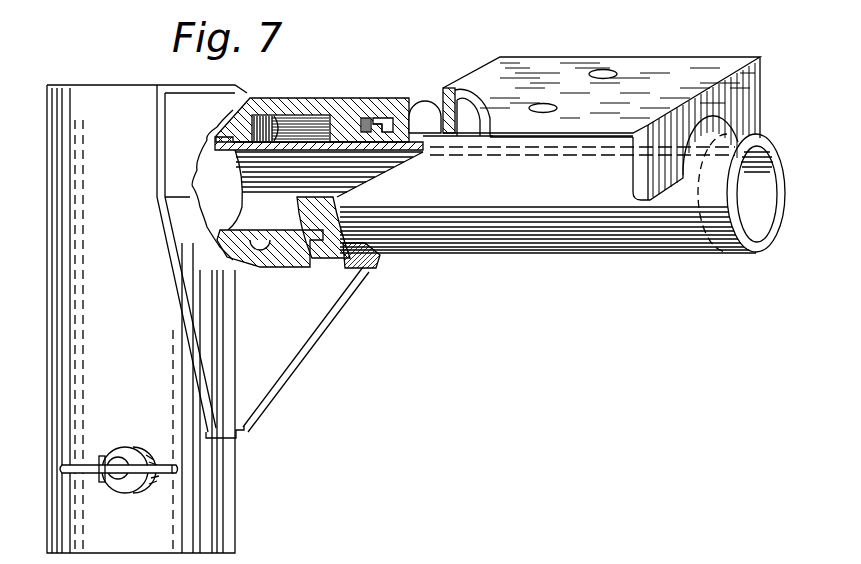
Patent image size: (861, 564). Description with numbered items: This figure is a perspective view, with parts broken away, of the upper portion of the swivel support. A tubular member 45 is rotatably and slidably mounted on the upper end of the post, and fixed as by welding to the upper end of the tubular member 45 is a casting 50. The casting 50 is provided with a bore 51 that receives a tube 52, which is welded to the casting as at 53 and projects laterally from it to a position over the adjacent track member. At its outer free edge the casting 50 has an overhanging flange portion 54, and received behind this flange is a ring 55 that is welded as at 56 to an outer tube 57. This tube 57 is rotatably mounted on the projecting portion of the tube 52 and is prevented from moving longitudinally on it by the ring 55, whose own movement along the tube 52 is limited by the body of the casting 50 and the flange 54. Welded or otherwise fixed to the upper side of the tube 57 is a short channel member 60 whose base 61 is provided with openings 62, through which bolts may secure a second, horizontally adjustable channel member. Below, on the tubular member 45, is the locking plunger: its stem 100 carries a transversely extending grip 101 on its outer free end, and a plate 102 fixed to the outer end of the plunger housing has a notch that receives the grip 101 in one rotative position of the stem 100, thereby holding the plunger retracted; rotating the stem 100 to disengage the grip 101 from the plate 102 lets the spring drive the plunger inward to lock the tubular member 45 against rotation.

The tubular member 45 is at (67, 395).
The casting 50 is at (252, 116).
The bore 51 is at (224, 146).
The tube 52 is at (291, 230).
The weld 53 is at (222, 236).
The overhanging flange portion 54 is at (418, 131).
The ring 55 is at (381, 121).
The weld 56 is at (357, 117).
The tube 57 is at (477, 150).
The channel member 60 is at (446, 94).
The base 61 is at (738, 64).
The openings 62 is at (568, 79).
The stem 100 is at (118, 476).
The grip 101 is at (162, 478).
The plate 102 is at (102, 454).